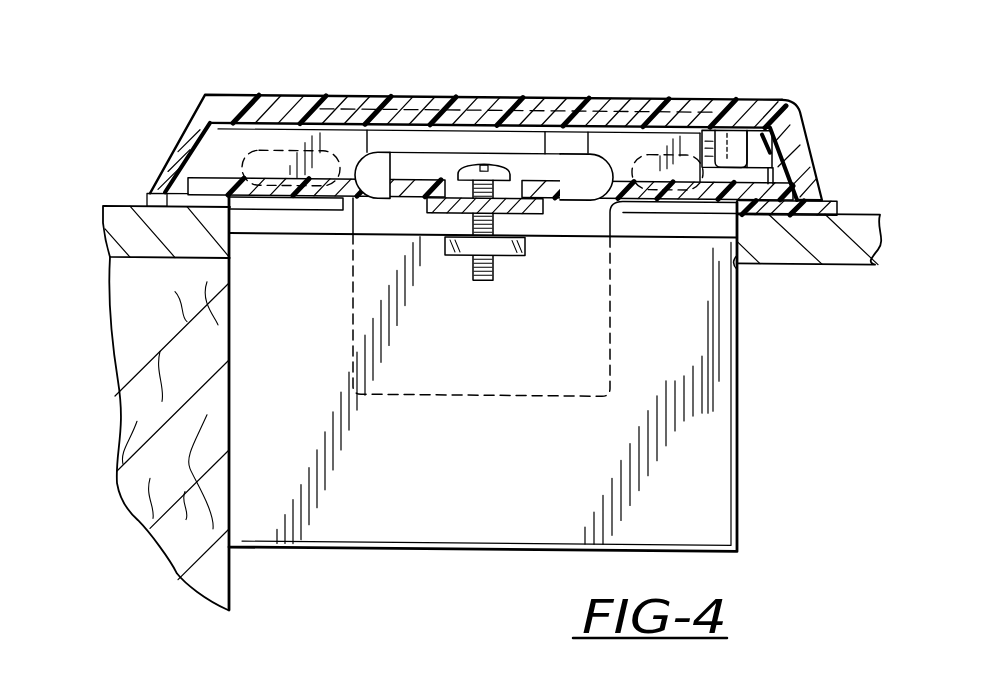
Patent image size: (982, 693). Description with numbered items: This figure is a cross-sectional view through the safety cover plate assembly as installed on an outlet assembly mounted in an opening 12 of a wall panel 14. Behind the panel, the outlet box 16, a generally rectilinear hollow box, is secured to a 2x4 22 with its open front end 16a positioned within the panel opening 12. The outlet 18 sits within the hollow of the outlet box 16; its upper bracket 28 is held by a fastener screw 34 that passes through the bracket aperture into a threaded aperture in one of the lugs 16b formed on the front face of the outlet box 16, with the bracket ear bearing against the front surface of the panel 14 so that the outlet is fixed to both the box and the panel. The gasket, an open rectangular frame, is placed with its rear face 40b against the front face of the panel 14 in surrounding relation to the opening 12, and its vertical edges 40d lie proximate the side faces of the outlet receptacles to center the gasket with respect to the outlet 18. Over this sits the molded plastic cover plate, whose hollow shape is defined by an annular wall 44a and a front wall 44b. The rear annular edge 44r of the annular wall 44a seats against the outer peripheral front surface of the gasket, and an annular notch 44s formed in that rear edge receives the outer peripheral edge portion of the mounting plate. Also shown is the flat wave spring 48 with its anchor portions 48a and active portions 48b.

The opening 12 is at (230, 245).
The wall panel 14 is at (137, 216).
The outlet box 16 is at (762, 463).
The open front end 16a is at (553, 230).
The lugs 16b is at (437, 216).
The outlet 18 is at (502, 400).
The 2x4 22 is at (245, 607).
The upper bracket 28 is at (433, 238).
The fastener screws 34 is at (496, 268).
The rear face 40b is at (182, 207).
The gasket vertical edges 40d is at (383, 148).
The annular wall 44a is at (200, 118).
The front wall 44b is at (753, 98).
The rear annular edge 44r is at (170, 208).
The annular notch 44s is at (197, 207).
The spring 48 is at (767, 127).
The anchor portions 48a is at (773, 140).
The active portions 48b is at (722, 133).